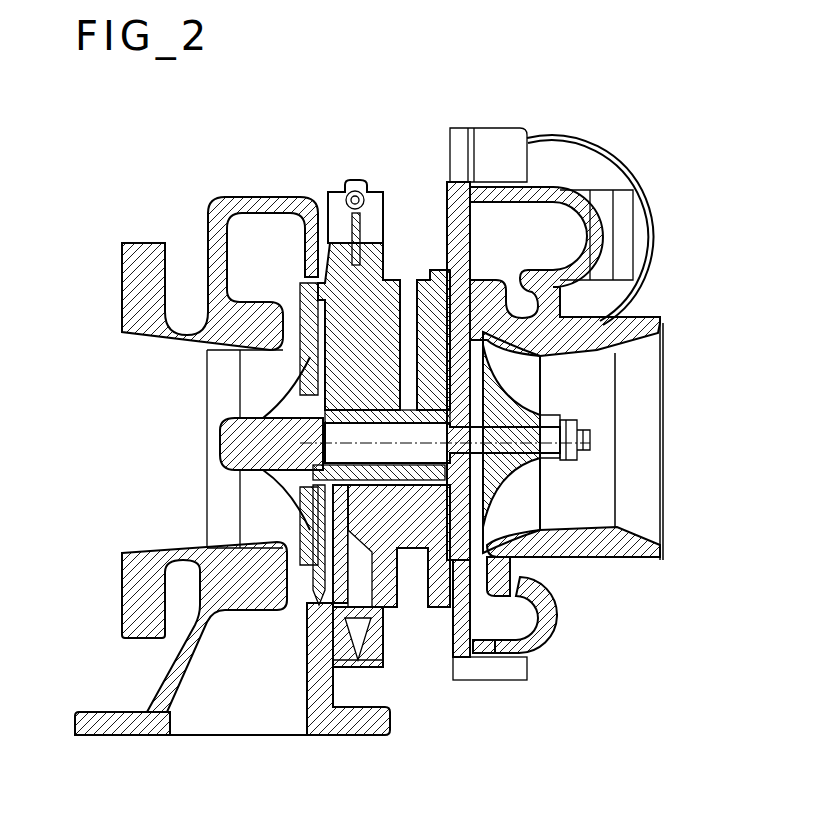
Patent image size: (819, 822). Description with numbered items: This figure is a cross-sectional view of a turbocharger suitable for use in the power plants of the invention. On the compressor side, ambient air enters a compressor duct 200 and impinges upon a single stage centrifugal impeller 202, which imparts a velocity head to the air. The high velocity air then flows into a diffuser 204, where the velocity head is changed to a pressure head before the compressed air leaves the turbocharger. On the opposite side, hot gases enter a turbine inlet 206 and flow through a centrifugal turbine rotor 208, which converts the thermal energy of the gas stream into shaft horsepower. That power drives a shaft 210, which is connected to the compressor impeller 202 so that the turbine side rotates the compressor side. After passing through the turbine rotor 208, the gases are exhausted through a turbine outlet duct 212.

The compressor duct 200 is at (612, 392).
The single stage centrifugal impeller 202 is at (527, 505).
The diffuser 204 is at (567, 218).
The turbine inlet 206 is at (232, 710).
The centrifugal turbine rotor 208 is at (252, 381).
The shaft 210 is at (370, 425).
The turbine outlet duct 212 is at (157, 545).